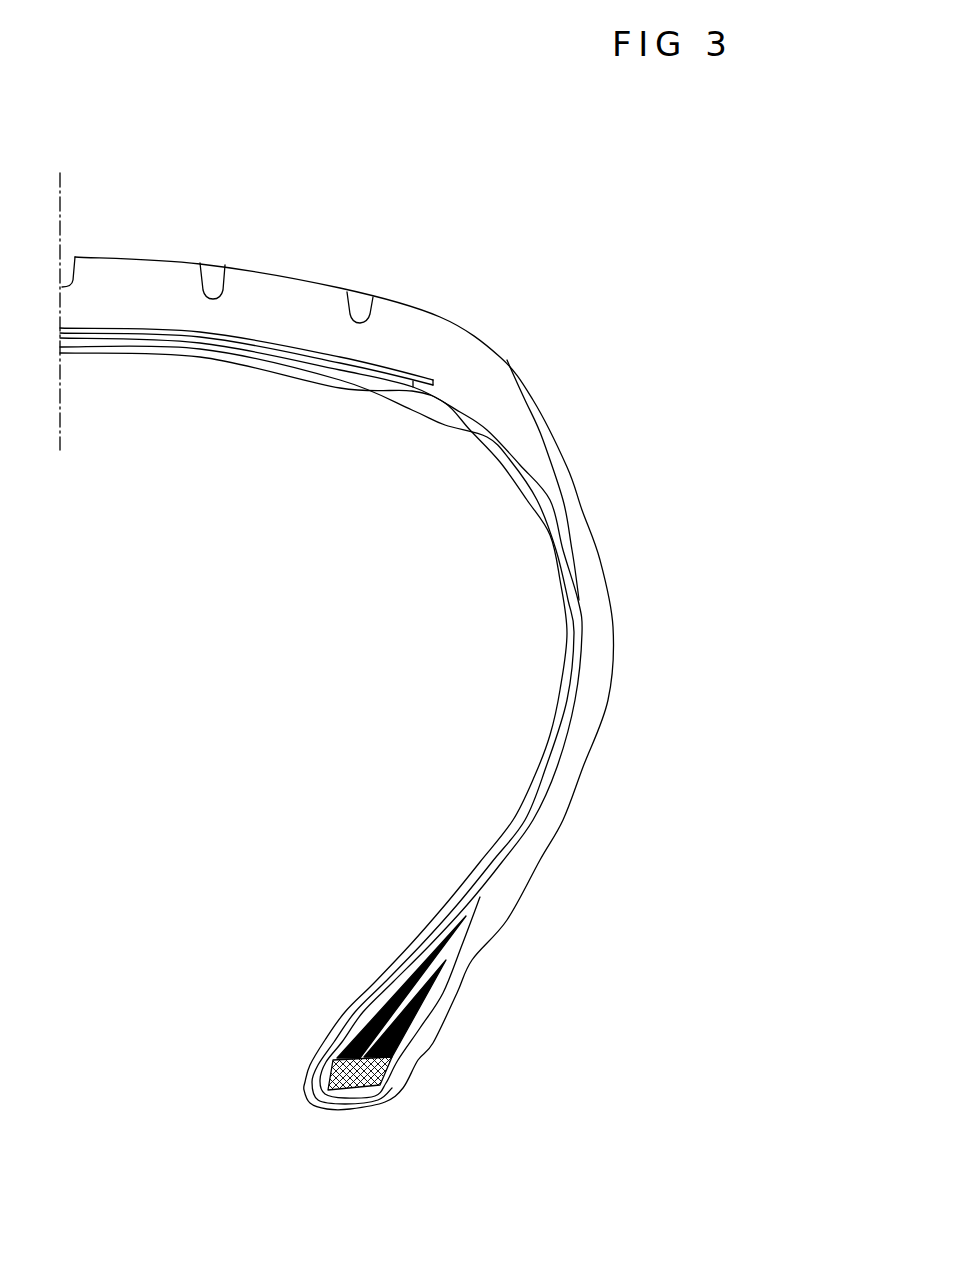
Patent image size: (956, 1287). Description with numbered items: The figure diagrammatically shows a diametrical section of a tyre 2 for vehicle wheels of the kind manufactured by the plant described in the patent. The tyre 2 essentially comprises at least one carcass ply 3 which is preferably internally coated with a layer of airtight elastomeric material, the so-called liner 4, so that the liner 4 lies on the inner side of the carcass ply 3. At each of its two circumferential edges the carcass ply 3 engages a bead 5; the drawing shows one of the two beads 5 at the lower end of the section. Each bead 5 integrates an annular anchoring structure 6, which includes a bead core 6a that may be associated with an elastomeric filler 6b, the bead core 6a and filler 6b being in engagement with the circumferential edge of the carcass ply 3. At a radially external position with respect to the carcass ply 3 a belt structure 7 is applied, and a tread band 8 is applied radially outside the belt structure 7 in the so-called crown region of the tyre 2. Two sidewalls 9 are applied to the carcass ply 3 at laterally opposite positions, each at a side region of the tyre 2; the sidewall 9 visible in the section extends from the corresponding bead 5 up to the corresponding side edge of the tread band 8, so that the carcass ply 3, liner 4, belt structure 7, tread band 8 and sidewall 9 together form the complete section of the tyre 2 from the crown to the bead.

The tyre 2 is at (213, 748).
The carcass ply 3 is at (488, 432).
The liner 4 is at (418, 415).
The bead 5 is at (447, 1063).
The annular anchoring structure 6 is at (324, 1025).
The bead core 6a is at (353, 1088).
The elastomeric filler 6b is at (405, 987).
The belt structure 7 is at (398, 363).
The tread band 8 is at (277, 273).
The sidewall 9 is at (610, 685).